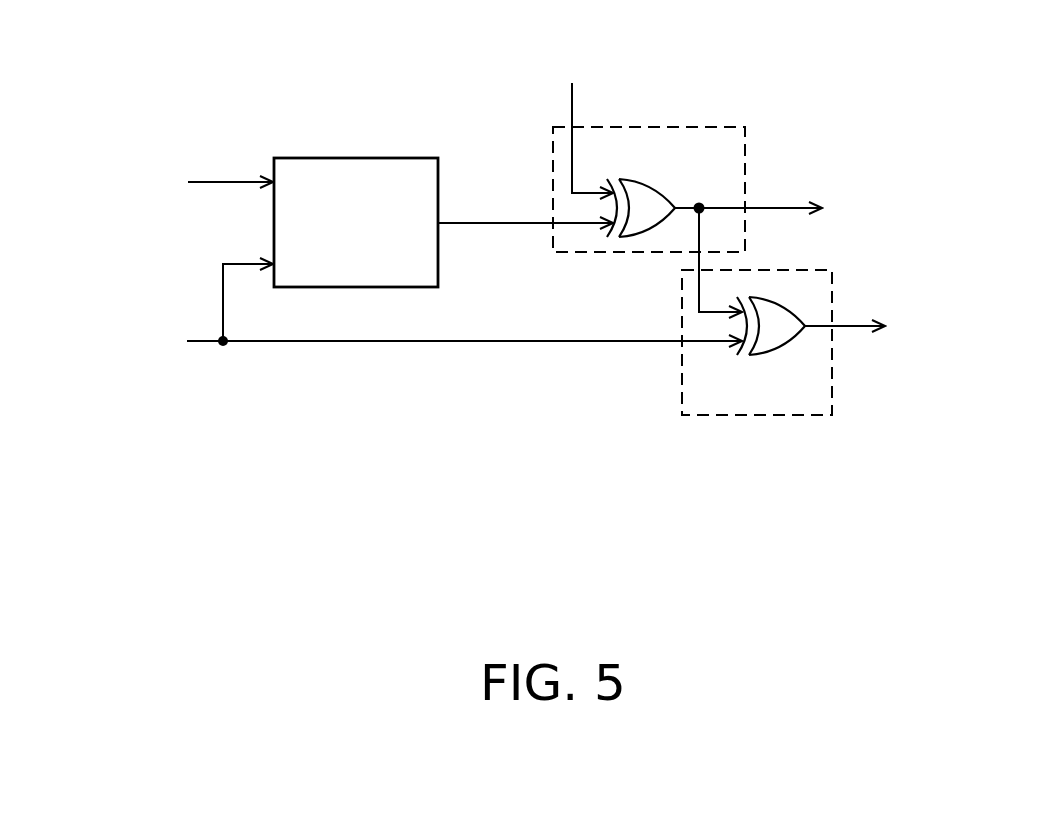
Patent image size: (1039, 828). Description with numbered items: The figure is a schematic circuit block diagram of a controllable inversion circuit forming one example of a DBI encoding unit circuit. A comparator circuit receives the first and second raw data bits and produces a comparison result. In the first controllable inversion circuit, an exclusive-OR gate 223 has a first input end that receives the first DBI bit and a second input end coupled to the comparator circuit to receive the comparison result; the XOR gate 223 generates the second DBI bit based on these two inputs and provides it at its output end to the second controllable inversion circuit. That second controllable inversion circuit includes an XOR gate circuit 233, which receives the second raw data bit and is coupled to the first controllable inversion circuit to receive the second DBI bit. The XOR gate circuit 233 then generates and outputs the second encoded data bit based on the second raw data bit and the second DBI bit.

The XOR gate 223 is at (655, 181).
The XOR gate circuit 233 is at (770, 353).